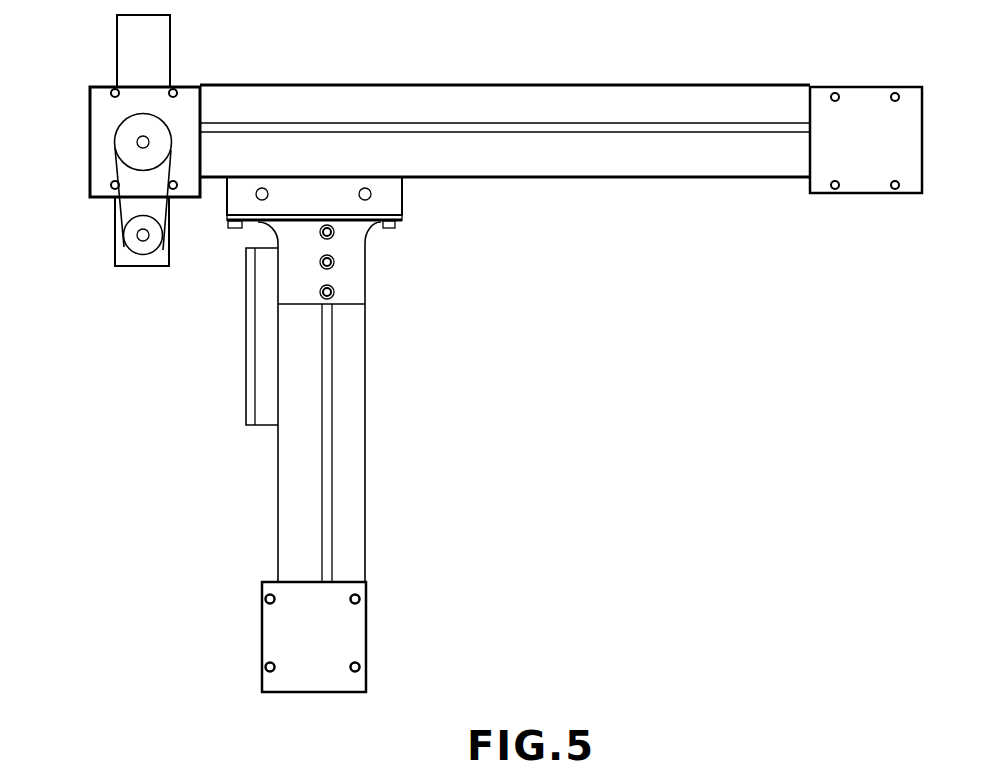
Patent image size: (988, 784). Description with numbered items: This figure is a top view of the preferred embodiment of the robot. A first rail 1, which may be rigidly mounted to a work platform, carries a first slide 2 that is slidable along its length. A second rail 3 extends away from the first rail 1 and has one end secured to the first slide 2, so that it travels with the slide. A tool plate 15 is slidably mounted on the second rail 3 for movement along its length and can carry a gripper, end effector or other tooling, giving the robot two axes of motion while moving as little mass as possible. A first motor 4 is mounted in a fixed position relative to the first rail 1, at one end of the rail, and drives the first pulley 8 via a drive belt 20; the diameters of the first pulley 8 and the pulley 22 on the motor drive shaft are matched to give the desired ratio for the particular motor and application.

The first rail 1 is at (601, 165).
The first slide 2 is at (390, 195).
The second rail 3 is at (353, 440).
The first motor 4 is at (126, 267).
The first pulley 8 is at (125, 128).
The tool plate 15 is at (250, 397).
The drive belt 20 is at (117, 170).
The pulley on the motor drive shaft 22 is at (150, 238).